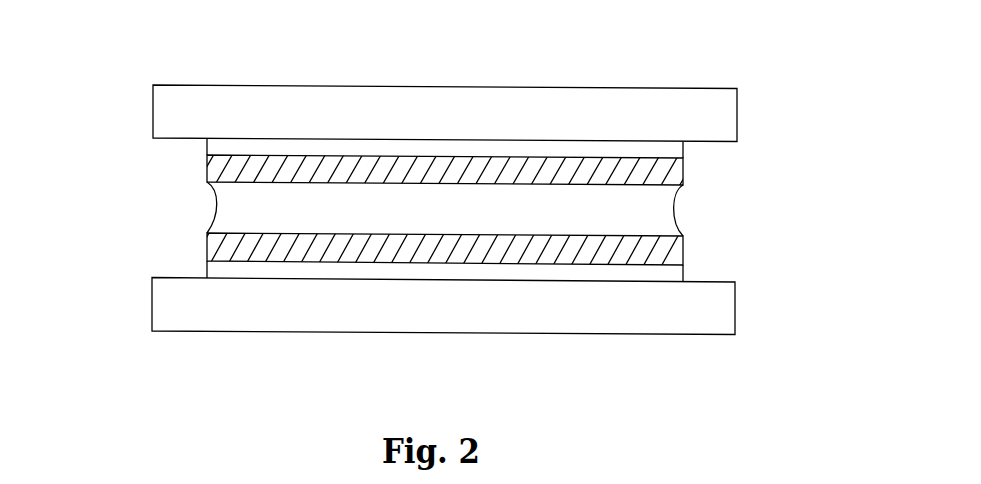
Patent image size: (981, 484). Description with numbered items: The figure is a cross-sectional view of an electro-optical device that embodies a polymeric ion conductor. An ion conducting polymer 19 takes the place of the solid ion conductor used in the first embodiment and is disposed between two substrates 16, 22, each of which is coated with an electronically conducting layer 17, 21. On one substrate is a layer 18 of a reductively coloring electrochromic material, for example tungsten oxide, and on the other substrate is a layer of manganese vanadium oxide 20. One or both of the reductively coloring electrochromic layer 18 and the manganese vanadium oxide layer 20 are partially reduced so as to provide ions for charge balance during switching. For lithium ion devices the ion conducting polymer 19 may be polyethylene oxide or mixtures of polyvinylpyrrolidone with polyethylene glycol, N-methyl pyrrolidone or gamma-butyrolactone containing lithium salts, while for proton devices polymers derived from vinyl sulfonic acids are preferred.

The substrate 16 is at (718, 308).
The electronically conducting layer 17 is at (673, 273).
The reductively coloring electrochromic layer 18 is at (215, 253).
The ion conducting polymer 19 is at (232, 208).
The MnxVyOz layer 20 is at (225, 173).
The electronically conducting layer 21 is at (672, 150).
The substrate 22 is at (718, 117).